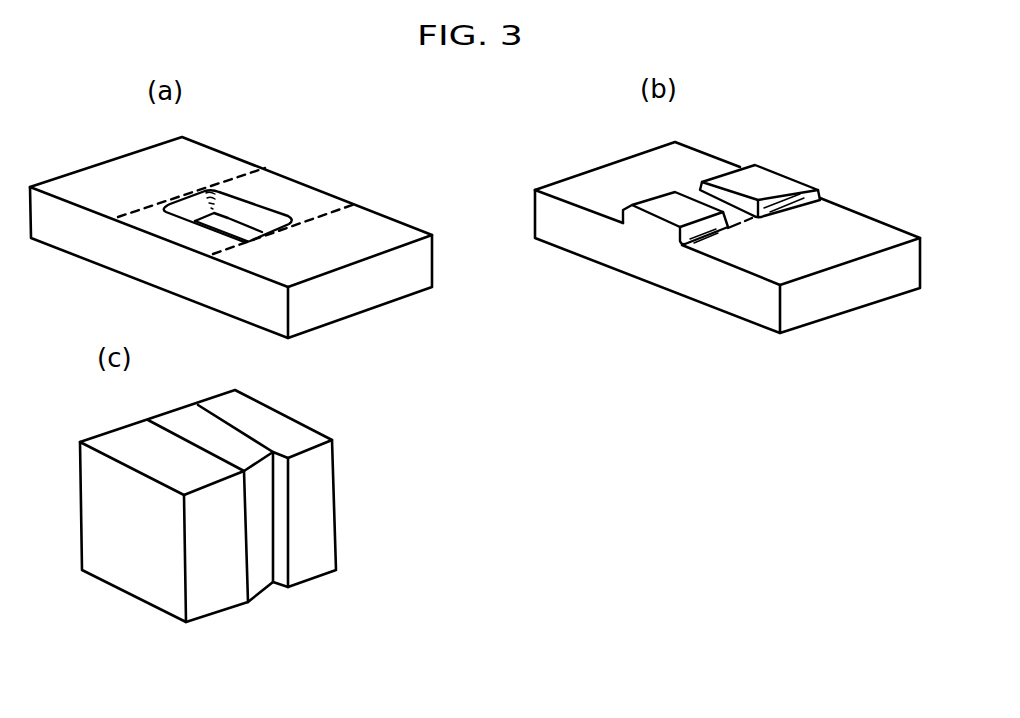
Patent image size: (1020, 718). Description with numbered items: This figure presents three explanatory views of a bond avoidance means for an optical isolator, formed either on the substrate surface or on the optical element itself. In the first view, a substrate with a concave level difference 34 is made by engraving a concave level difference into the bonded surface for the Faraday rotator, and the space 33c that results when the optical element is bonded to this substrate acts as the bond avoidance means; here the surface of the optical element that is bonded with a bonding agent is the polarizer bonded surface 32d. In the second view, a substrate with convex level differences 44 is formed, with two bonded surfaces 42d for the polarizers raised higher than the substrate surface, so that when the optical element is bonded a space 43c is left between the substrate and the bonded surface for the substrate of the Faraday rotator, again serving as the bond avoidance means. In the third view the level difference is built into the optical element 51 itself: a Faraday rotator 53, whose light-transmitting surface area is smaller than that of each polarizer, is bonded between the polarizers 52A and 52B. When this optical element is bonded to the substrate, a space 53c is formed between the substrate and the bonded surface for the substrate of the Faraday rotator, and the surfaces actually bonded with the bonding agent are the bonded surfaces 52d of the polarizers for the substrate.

The polarizer bonded surface 32d is at (290, 193).
The space 33c is at (246, 208).
The substrate with a concave level difference 34 is at (380, 292).
The bonded surfaces for polarizers 42d is at (670, 210).
The space 43c is at (752, 226).
The substrate with convex level differences 44 is at (700, 287).
The optical element 51 is at (242, 512).
The polarizer 52A is at (132, 572).
The polarizer 52B is at (232, 408).
The bonded surface for the substrate of the polarizers 52d is at (312, 528).
The Faraday rotator 53 is at (187, 423).
The space 53c is at (267, 594).